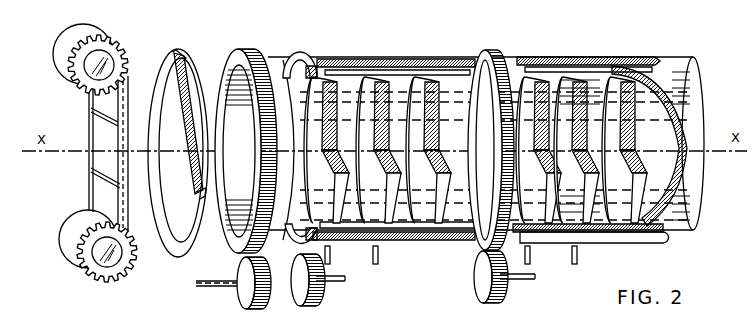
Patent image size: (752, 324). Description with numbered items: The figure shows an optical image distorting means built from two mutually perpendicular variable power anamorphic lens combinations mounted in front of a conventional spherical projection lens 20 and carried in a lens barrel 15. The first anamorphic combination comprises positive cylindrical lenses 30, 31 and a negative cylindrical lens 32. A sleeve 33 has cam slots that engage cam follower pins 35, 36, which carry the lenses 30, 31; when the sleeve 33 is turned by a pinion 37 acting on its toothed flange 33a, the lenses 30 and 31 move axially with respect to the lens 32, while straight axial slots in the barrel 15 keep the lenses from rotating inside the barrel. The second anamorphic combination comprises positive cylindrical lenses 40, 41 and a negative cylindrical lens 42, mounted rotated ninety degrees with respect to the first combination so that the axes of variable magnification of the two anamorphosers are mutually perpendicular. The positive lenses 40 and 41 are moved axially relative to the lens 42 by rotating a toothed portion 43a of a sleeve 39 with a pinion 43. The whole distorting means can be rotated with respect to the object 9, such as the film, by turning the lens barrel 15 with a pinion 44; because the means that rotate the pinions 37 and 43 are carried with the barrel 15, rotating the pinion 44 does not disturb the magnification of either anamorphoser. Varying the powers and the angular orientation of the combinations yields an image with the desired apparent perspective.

The object 9 is at (95, 153).
The lens barrel 15 is at (251, 139).
The spherical projection lens 20 is at (179, 141).
The positive cylindrical lens 30 is at (330, 124).
The positive cylindrical lens 31 is at (384, 124).
The negative cylindrical lens 32 is at (429, 124).
The sleeve 33 is at (394, 164).
The toothed flange 33a is at (300, 127).
The cam follower pin 35 is at (340, 258).
The cam follower pin 36 is at (391, 276).
The pinion 37 is at (321, 280).
The sleeve 39 is at (591, 162).
The positive cylindrical lens 40 is at (538, 123).
The positive cylindrical lens 41 is at (585, 123).
The negative cylindrical lens 42 is at (644, 125).
The pinion 43 is at (506, 279).
The toothed portion 43a is at (491, 131).
The pinion 44 is at (233, 280).